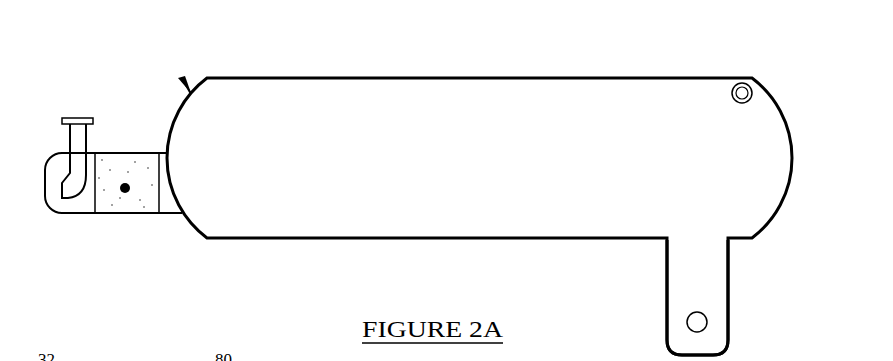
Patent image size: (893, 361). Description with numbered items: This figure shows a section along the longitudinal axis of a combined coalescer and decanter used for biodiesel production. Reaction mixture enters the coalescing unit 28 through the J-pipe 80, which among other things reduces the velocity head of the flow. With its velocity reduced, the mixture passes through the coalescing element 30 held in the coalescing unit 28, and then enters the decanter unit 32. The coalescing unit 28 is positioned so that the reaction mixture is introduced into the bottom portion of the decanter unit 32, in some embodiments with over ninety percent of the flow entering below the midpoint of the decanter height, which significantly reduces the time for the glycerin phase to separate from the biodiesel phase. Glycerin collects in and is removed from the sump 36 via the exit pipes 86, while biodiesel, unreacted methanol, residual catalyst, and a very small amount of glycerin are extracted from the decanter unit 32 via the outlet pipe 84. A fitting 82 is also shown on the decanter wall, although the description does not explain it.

The decanter unit 32 is at (668, 66).
The sump 36 is at (660, 278).
The outlet pipe 84 is at (762, 108).
The exit pipes 86 is at (710, 300).
The coalescing unit 28 is at (135, 226).
The coalescing element 30 is at (122, 200).
The J-pipe 80 is at (66, 108).
The fitting 82 is at (176, 72).